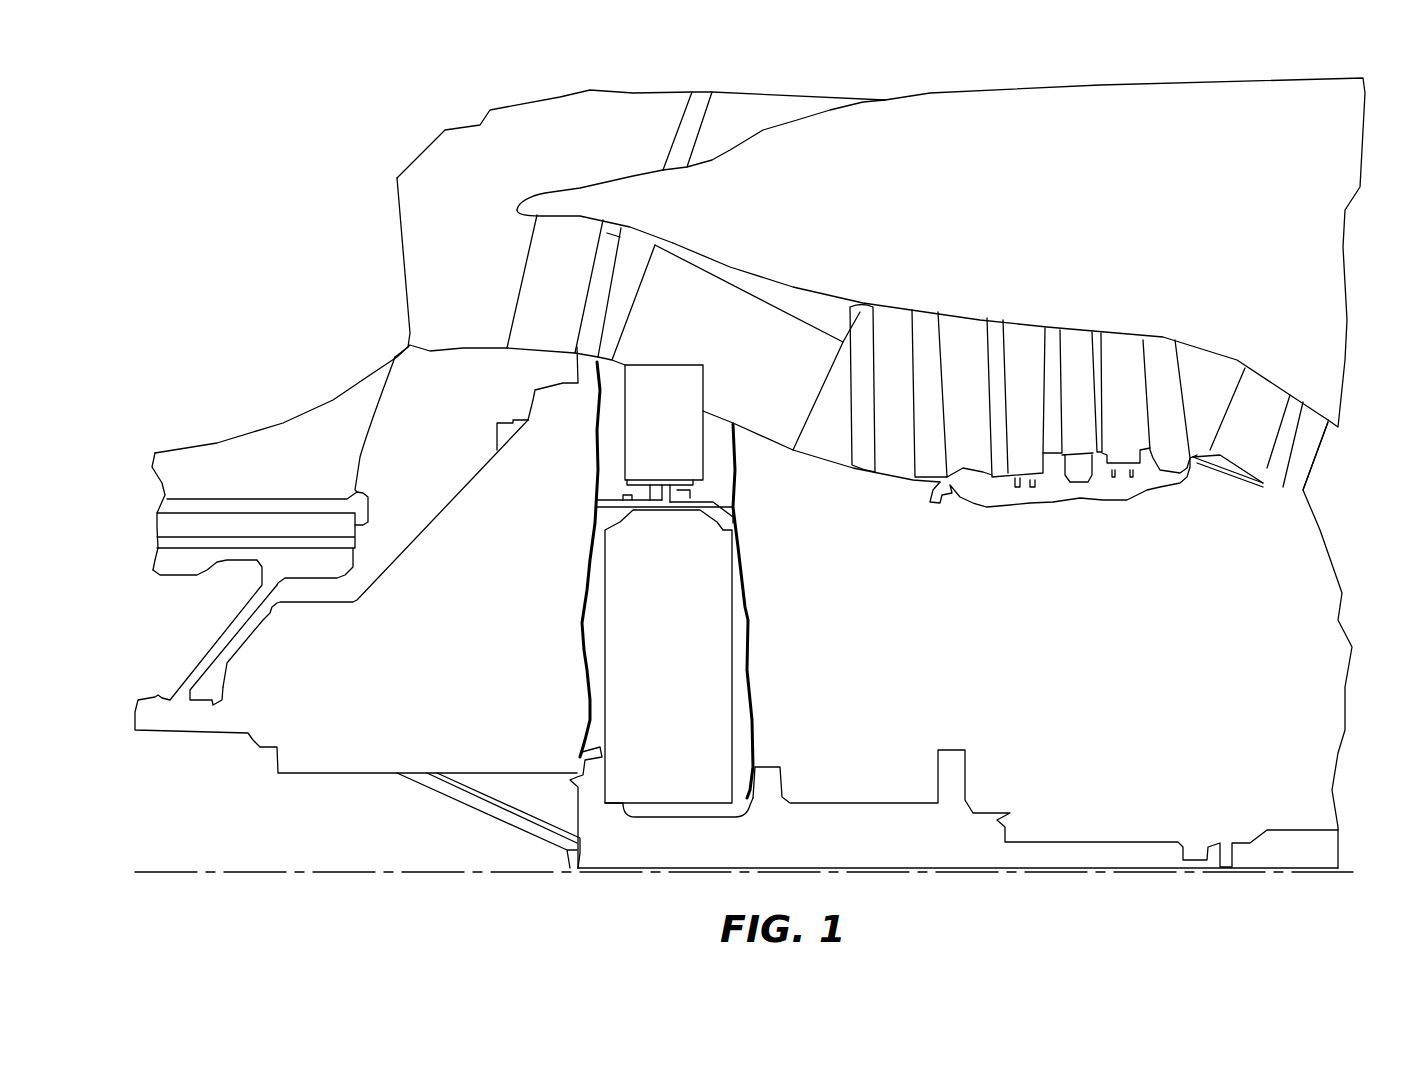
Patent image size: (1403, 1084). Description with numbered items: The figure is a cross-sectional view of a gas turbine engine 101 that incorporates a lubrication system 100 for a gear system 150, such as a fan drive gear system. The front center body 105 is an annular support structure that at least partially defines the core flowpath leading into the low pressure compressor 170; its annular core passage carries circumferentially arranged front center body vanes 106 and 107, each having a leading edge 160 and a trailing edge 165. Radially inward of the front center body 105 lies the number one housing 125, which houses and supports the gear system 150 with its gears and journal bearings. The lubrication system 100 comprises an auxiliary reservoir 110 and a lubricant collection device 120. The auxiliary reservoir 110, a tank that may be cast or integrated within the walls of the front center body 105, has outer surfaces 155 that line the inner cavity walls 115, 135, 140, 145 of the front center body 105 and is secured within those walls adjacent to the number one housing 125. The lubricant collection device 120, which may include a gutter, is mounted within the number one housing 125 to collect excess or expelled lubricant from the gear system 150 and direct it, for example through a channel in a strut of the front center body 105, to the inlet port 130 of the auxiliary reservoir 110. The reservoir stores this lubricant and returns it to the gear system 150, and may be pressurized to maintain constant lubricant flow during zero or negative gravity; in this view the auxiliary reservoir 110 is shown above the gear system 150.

The lubrication system 100 is at (494, 200).
The gas turbine engine 101 is at (205, 180).
The front center body 105 is at (730, 268).
The front center body vane 106 is at (613, 233).
The front center body vane 107 is at (860, 308).
The auxiliary reservoir 110 is at (668, 273).
The inner cavity wall 115 is at (597, 283).
The lubricant collection device 120 is at (600, 408).
The number one housing 125 is at (440, 513).
The inlet port 130 is at (668, 378).
The inner cavity wall 135 is at (793, 285).
The inner cavity wall 140 is at (817, 455).
The inner cavity wall 145 is at (853, 350).
The gear system 150 is at (692, 665).
The outer surface 155 is at (610, 237).
The leading edge 160 is at (577, 327).
The trailing edge 165 is at (875, 445).
The low pressure compressor 170 is at (1263, 487).